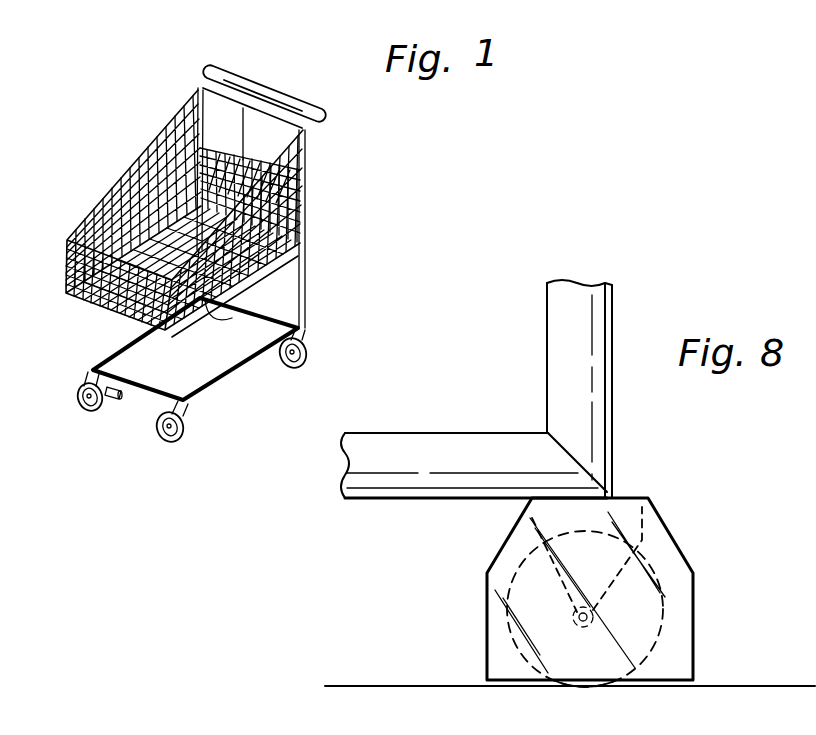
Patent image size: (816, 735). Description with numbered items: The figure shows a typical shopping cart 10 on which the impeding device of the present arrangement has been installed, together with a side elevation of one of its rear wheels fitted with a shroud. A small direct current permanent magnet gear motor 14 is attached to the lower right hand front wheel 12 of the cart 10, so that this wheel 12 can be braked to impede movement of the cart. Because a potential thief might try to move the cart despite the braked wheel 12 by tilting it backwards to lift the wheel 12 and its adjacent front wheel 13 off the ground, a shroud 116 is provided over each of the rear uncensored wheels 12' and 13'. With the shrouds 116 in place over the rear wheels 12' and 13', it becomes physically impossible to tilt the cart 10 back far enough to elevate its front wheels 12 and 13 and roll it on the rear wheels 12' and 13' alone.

In FIG. 1, the shopping cart 10 is at (317, 199).
In FIG. 1, the front wheel 12 is at (69, 440).
In FIG. 1, the front wheel 13 is at (196, 451).
In FIG. 1, the rear wheel 12' is at (291, 280).
In FIG. 1, the rear wheel 13' is at (342, 350).
In FIG. 8, the rear wheel 13' is at (646, 597).
In FIG. 1, the direct current permanent magnet gear motor 14 is at (117, 398).
In FIG. 8, the shroud 116 is at (675, 560).